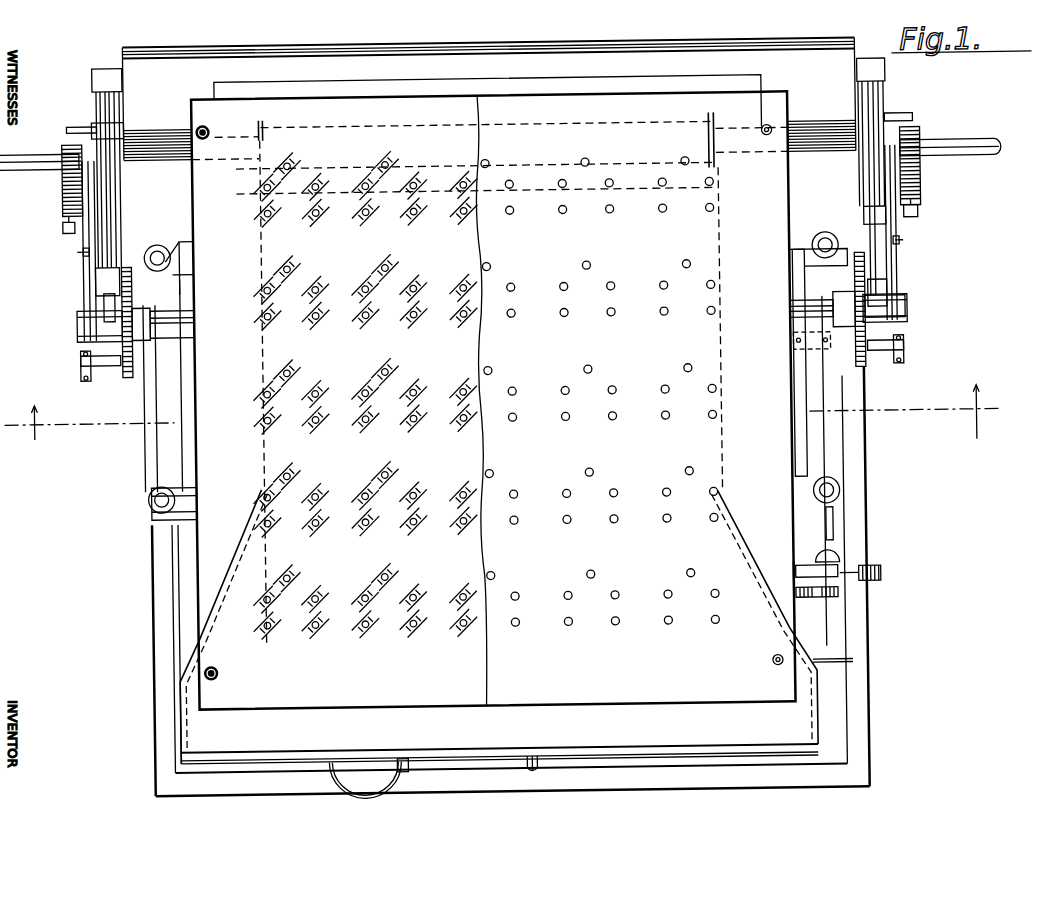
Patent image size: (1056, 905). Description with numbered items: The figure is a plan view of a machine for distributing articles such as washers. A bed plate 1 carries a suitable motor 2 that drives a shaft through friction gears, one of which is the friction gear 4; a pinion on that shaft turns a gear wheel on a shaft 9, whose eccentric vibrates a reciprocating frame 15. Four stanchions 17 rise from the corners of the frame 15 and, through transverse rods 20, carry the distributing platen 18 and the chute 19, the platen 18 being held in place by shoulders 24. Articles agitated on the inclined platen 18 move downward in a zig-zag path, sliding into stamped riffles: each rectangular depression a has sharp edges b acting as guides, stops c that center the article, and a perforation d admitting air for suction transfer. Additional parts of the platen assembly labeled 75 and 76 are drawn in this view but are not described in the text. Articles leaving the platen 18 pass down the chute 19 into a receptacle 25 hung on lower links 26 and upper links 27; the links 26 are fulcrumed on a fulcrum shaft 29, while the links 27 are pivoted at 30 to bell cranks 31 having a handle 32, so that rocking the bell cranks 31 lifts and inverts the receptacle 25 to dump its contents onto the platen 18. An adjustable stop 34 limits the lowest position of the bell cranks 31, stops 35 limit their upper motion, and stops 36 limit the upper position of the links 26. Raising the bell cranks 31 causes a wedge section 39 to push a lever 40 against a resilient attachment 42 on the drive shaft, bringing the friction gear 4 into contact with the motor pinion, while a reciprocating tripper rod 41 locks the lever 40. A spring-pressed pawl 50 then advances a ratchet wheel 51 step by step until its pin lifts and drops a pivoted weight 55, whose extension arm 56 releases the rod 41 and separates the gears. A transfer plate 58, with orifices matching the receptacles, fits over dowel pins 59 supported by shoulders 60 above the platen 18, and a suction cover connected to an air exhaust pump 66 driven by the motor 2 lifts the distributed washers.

The bed plate 1 is at (172, 576).
The motor 2 is at (475, 750).
The friction gear 4 is at (850, 664).
The shaft 9 is at (509, 418).
The reciprocating frame 15 is at (197, 252).
The stanchions 17 is at (161, 241).
The distributing platen 18 is at (493, 400).
The chute 19 is at (420, 442).
The transverse rods 20 is at (192, 487).
The shoulders 24 is at (214, 130).
The receptacle 25 is at (489, 98).
The lower links 26 is at (92, 260).
The upper links 27 is at (124, 180).
The fulcrum shaft 29 is at (197, 316).
The pivot 30 is at (66, 221).
The bell cranks 31 is at (86, 281).
The handle 32 is at (45, 151).
The adjustable stop 34 is at (86, 246).
The stops 35 is at (82, 356).
The stops 36 is at (106, 301).
The wedge section 39 is at (770, 663).
The lever 40 is at (797, 349).
The reciprocating tripper rod 41 is at (833, 530).
The resilient attachment 42 is at (840, 561).
The spring-pressed pawl 50 is at (818, 602).
The ratchet wheel 51 is at (790, 581).
The pivoted weight 55 is at (880, 578).
The extension arm 56 is at (802, 569).
The transfer plate 58 is at (600, 415).
The dowel pins 59 is at (202, 125).
The shoulders 60 is at (208, 121).
The air exhaust pump 66 is at (369, 779).
The header pipe 75 is at (537, 166).
The bracket 76 is at (270, 121).
The rectangular depression a is at (301, 331).
The sharp edges b is at (300, 380).
The stops c is at (318, 391).
The perforation d is at (306, 418).